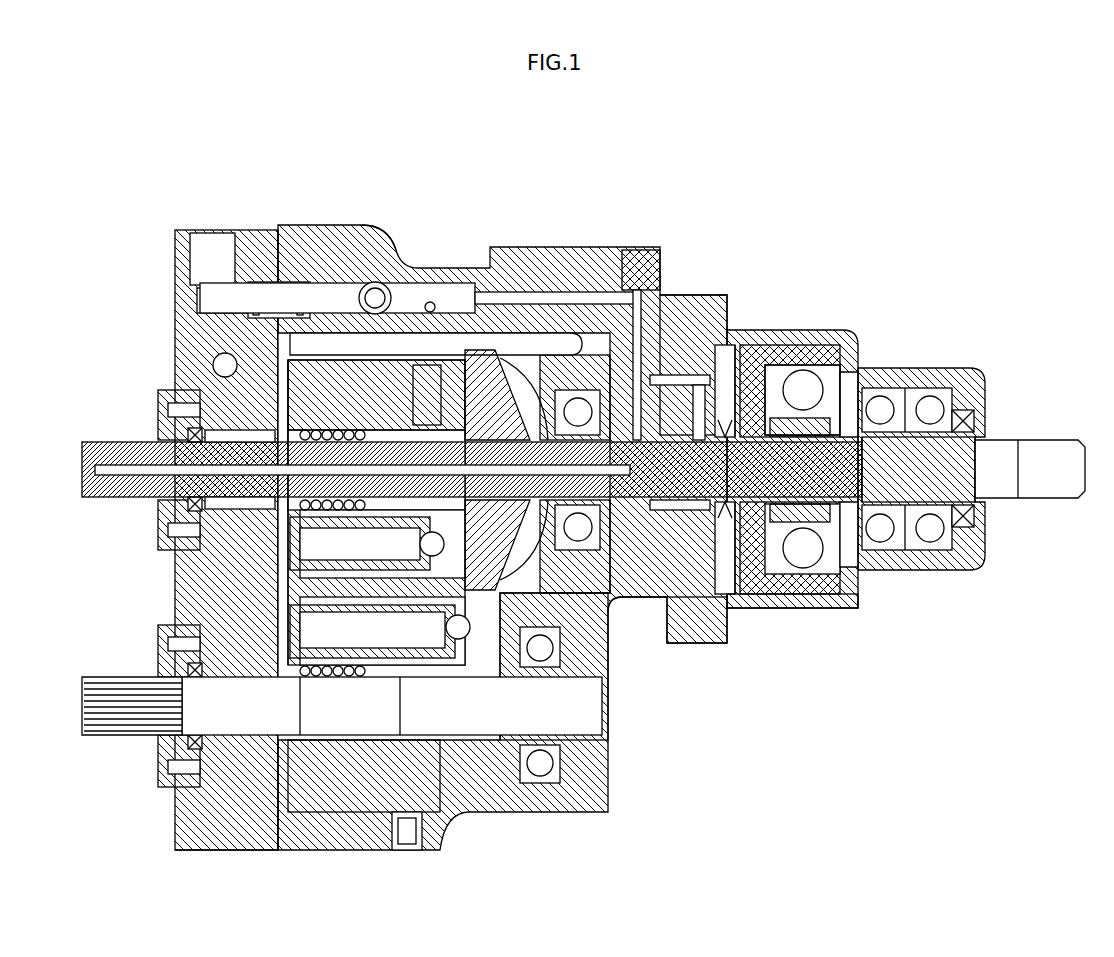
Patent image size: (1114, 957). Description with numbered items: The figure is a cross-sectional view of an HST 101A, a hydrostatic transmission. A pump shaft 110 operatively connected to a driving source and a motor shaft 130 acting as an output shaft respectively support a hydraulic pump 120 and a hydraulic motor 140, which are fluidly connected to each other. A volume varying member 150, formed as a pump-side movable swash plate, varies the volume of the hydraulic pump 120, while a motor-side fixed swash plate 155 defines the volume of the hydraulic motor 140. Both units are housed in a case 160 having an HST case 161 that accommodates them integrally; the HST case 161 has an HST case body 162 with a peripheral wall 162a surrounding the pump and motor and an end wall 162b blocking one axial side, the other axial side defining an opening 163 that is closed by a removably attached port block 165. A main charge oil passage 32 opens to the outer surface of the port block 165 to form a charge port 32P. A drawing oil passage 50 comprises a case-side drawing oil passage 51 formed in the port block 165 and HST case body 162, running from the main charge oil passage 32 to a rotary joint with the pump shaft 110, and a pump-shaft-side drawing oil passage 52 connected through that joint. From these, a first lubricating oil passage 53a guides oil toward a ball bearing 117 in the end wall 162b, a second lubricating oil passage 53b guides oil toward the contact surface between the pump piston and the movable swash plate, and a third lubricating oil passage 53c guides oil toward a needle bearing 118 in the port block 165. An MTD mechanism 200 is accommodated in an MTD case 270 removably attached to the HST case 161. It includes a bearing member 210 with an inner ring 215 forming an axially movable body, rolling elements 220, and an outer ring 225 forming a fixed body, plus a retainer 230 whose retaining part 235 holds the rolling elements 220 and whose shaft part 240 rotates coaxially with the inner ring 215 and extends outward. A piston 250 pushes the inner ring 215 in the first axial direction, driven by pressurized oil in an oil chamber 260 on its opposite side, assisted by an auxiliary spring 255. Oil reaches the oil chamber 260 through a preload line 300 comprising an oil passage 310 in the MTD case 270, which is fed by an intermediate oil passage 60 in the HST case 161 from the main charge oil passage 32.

The HST 101A is at (878, 206).
The pump shaft 110 is at (118, 455).
The ball bearing 117 is at (672, 628).
The needle bearing 118 is at (245, 420).
The hydraulic pump 120 is at (345, 348).
The motor shaft 130 is at (110, 722).
The hydraulic motor 140 is at (341, 808).
The volume varying member 150 is at (503, 345).
The motor-side fixed swash plate 155 is at (445, 812).
The case 160 is at (467, 177).
The HST case 161 is at (330, 152).
The HST case body 162 is at (314, 205).
The peripheral wall 162a is at (388, 263).
The end wall 162b is at (615, 630).
The opening 163 is at (293, 347).
The port block 165 is at (252, 206).
The MTD mechanism 200 is at (815, 325).
The bearing member 210 is at (950, 278).
The inner ring 215 is at (835, 422).
The rolling elements 220 is at (830, 400).
The outer ring 225 is at (835, 385).
The retainer 230 is at (955, 630).
The retaining part 235 is at (905, 557).
The shaft part 240 is at (922, 487).
The piston 250 is at (757, 365).
The auxiliary spring 255 is at (727, 415).
The oil chamber 260 is at (740, 610).
The MTD case 270 is at (1009, 360).
The preload line 300 is at (680, 505).
The oil passage 310 is at (693, 375).
The main charge oil passage 32 is at (195, 262).
The charge port 32P is at (207, 232).
The drawing oil passage 50 is at (440, 283).
The case-side drawing oil passage 51 is at (580, 297).
The pump-shaft-side drawing oil passage 52 is at (292, 515).
The first lubricating oil passage 53a is at (608, 402).
The second lubricating oil passage 53b is at (428, 366).
The third lubricating oil passage 53c is at (168, 497).
The intermediate oil passage 60 is at (655, 348).